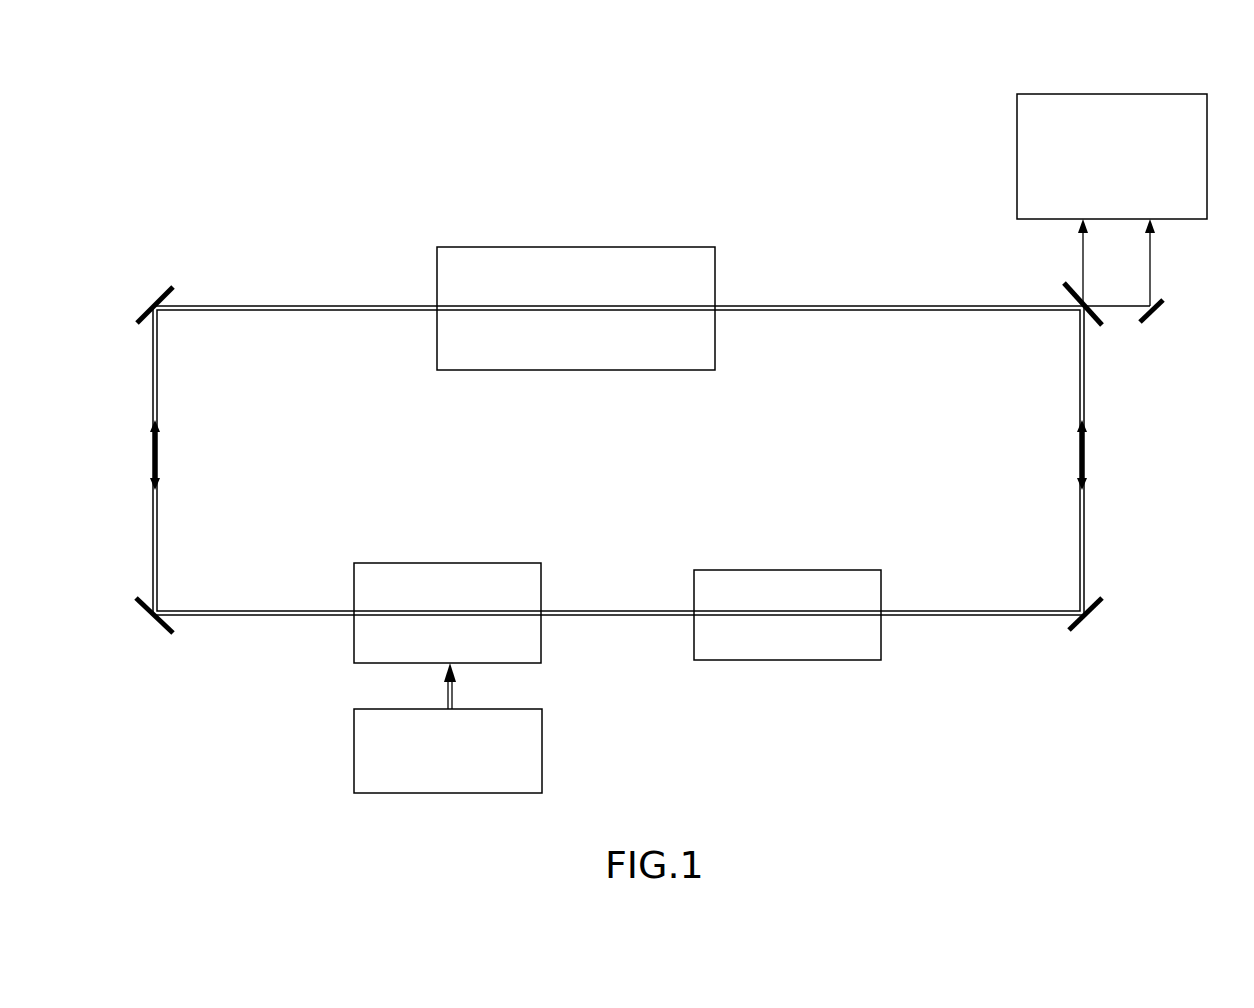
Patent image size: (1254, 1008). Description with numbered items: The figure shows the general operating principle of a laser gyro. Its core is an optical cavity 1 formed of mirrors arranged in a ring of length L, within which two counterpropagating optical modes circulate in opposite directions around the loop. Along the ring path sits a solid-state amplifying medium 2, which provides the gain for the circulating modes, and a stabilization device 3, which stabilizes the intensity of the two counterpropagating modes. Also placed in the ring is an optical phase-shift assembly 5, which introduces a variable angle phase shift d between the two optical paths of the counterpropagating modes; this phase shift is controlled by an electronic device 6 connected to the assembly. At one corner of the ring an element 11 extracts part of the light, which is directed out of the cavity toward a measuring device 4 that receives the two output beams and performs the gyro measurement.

The optical cavity 1 is at (677, 460).
The solid-state amplifying medium 2 is at (818, 637).
The stabilization device 3 is at (698, 333).
The measuring device 4 is at (1063, 100).
The optical phase-shift assembly 5 is at (442, 600).
The electronic device 6 is at (373, 770).
The beam splitter 11 is at (1107, 332).